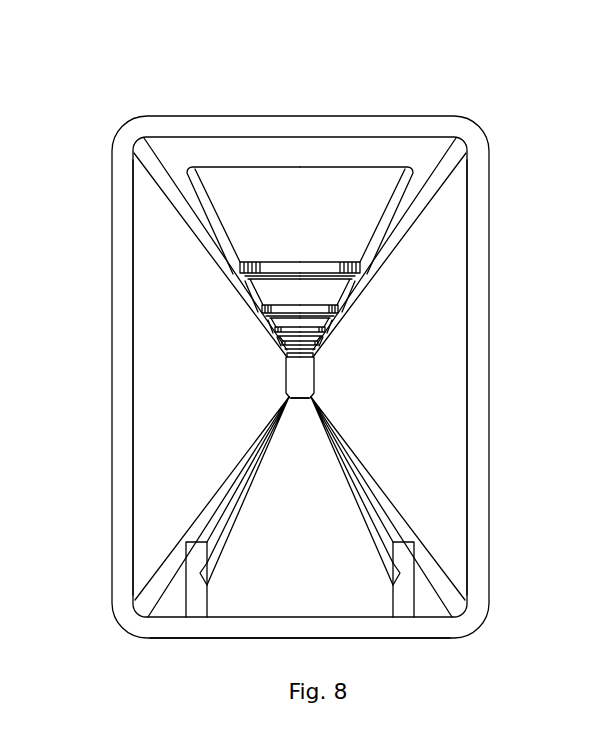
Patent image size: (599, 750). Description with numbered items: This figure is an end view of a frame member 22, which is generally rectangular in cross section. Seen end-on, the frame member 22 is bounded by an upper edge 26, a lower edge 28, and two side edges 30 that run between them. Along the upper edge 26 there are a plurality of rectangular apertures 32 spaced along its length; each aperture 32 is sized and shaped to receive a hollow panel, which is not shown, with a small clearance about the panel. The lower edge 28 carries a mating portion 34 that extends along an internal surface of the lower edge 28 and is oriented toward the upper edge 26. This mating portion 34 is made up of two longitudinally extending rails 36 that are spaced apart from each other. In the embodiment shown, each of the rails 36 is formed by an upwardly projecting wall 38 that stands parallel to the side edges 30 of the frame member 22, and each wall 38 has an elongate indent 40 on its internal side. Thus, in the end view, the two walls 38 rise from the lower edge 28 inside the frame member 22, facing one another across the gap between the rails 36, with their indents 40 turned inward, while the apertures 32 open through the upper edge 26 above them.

The frame member 22 is at (137, 130).
The upper edge 26 is at (378, 122).
The lower edge 28 is at (258, 630).
The side edges 30 is at (117, 298).
The rectangular apertures 32 is at (298, 207).
The mating portion 34 is at (373, 477).
The rails 36 is at (213, 505).
The upwardly projecting wall 38 is at (193, 562).
The elongate indent 40 is at (209, 571).